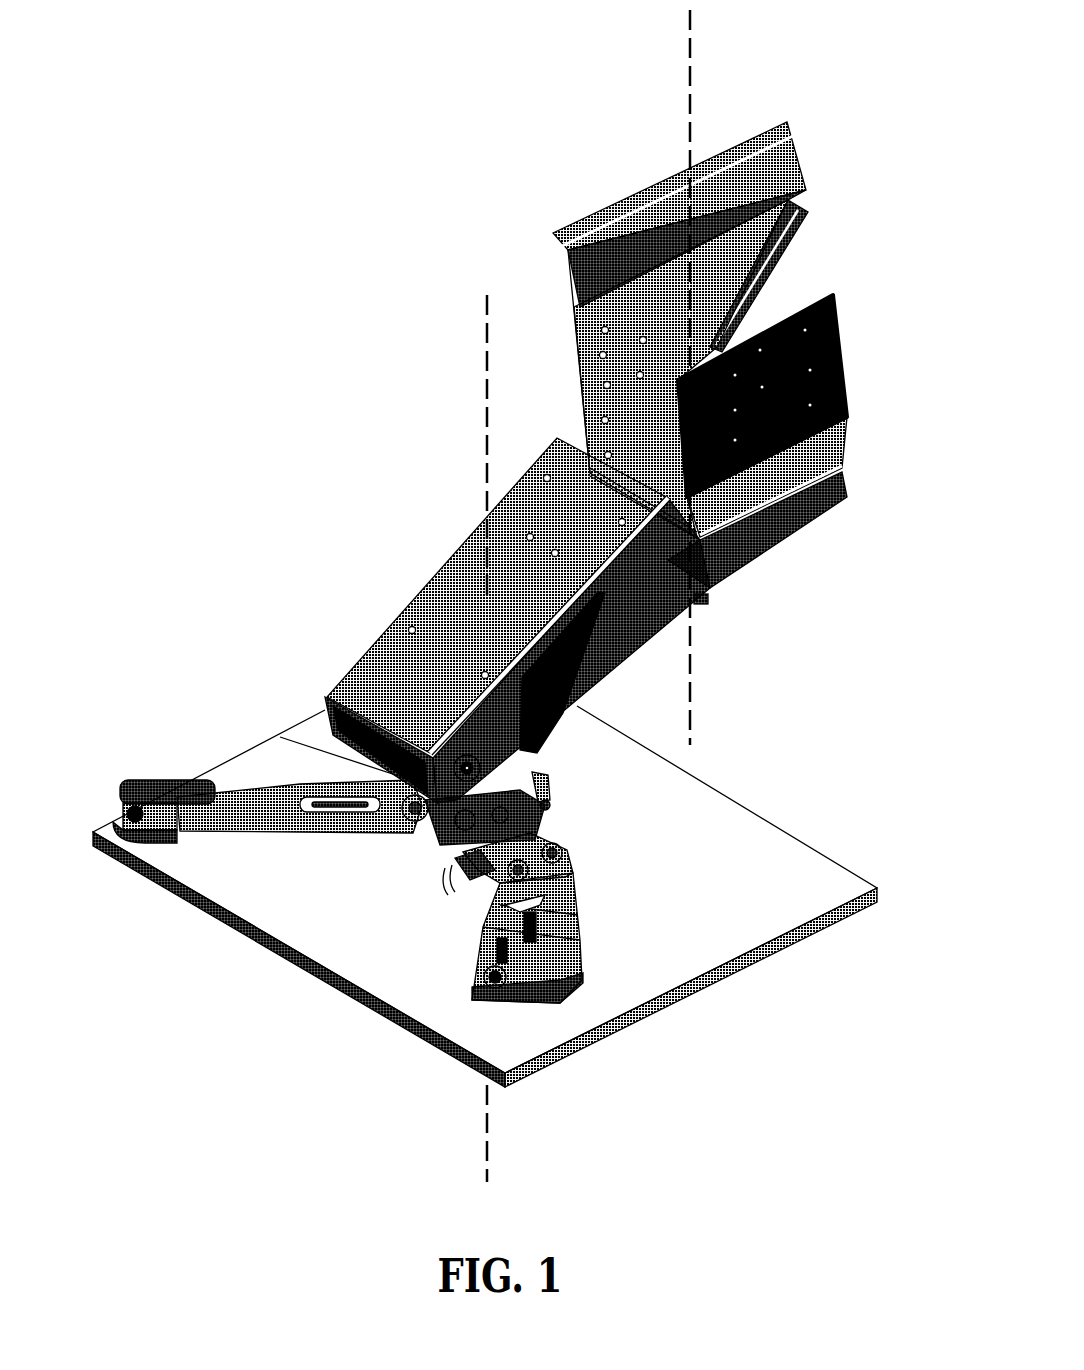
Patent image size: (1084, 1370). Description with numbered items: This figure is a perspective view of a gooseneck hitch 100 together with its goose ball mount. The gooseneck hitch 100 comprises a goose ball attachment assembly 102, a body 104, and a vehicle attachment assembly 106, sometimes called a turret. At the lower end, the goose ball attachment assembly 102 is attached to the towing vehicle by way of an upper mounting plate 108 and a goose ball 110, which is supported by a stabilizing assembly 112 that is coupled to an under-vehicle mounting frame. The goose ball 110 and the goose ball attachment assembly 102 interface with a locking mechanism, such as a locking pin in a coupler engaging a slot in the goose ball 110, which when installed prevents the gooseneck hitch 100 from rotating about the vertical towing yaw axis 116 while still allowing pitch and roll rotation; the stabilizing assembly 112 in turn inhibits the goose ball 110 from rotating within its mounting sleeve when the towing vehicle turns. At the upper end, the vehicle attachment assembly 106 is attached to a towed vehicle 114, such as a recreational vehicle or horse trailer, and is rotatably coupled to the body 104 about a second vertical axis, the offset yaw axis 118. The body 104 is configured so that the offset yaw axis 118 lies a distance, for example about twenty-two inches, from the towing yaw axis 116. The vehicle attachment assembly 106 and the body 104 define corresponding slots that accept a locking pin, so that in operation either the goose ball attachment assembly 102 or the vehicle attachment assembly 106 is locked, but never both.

The gooseneck hitch 100 is at (463, 465).
The goose ball attachment assembly 102 is at (548, 798).
The body 104 is at (733, 568).
The vehicle attachment assembly 106 is at (840, 296).
The upper mounting plate 108 is at (720, 800).
The goose ball 110 is at (476, 875).
The stabilizing assembly 112 is at (565, 880).
The towed vehicle 114 is at (800, 166).
The vertical axis 116 is at (488, 302).
The vertical axis 118 is at (692, 74).